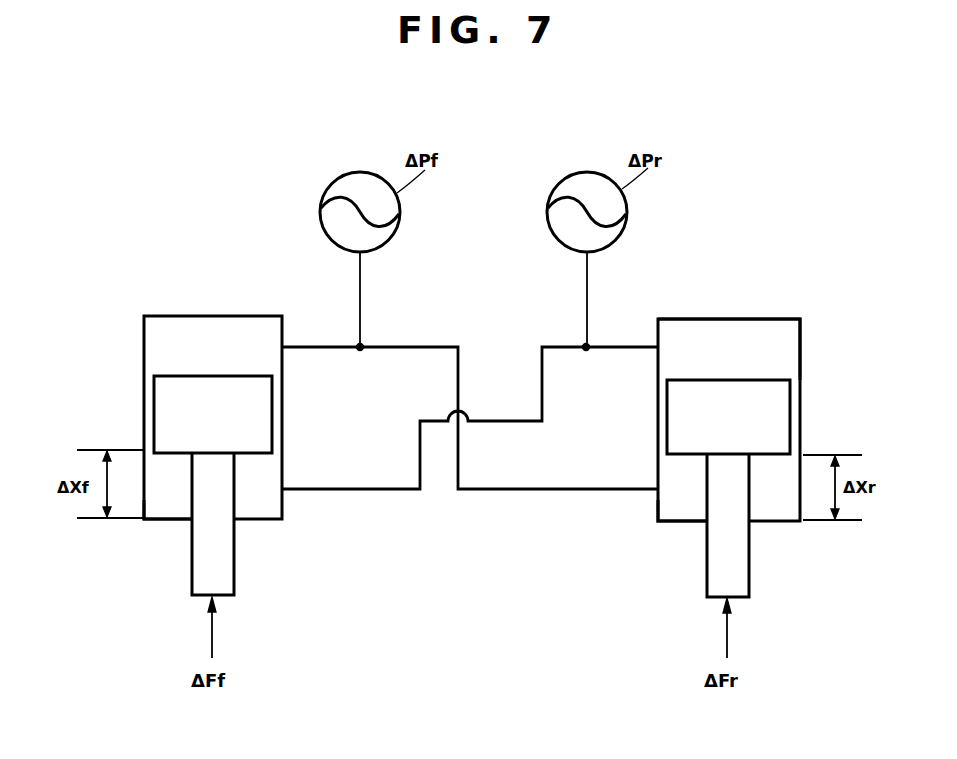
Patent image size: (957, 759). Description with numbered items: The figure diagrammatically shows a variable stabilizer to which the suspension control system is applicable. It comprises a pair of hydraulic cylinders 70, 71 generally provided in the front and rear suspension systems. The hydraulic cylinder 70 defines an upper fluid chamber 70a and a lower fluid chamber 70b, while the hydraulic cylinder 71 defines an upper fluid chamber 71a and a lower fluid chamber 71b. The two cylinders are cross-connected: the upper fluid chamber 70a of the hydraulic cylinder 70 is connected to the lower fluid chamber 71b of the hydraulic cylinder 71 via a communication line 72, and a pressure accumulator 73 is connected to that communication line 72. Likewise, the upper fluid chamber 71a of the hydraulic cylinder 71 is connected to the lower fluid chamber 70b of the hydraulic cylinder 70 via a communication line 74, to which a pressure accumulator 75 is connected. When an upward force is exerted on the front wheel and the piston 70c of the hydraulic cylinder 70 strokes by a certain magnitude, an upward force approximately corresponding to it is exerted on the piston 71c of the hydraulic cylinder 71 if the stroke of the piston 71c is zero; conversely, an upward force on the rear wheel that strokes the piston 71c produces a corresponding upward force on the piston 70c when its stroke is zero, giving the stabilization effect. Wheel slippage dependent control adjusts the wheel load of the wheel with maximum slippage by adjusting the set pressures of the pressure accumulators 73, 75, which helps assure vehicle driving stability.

The hydraulic cylinder 70 is at (144, 395).
The upper fluid chamber 70a is at (155, 363).
The lower fluid chamber 70b is at (165, 512).
The piston 70c is at (250, 455).
The hydraulic cylinder 71 is at (800, 417).
The upper fluid chamber 71a is at (782, 352).
The lower fluid chamber 71b is at (677, 507).
The piston 71c is at (667, 443).
The communication line 72 is at (412, 346).
The pressure accumulator 73 is at (353, 172).
The communication line 74 is at (380, 490).
The pressure accumulator 75 is at (583, 173).